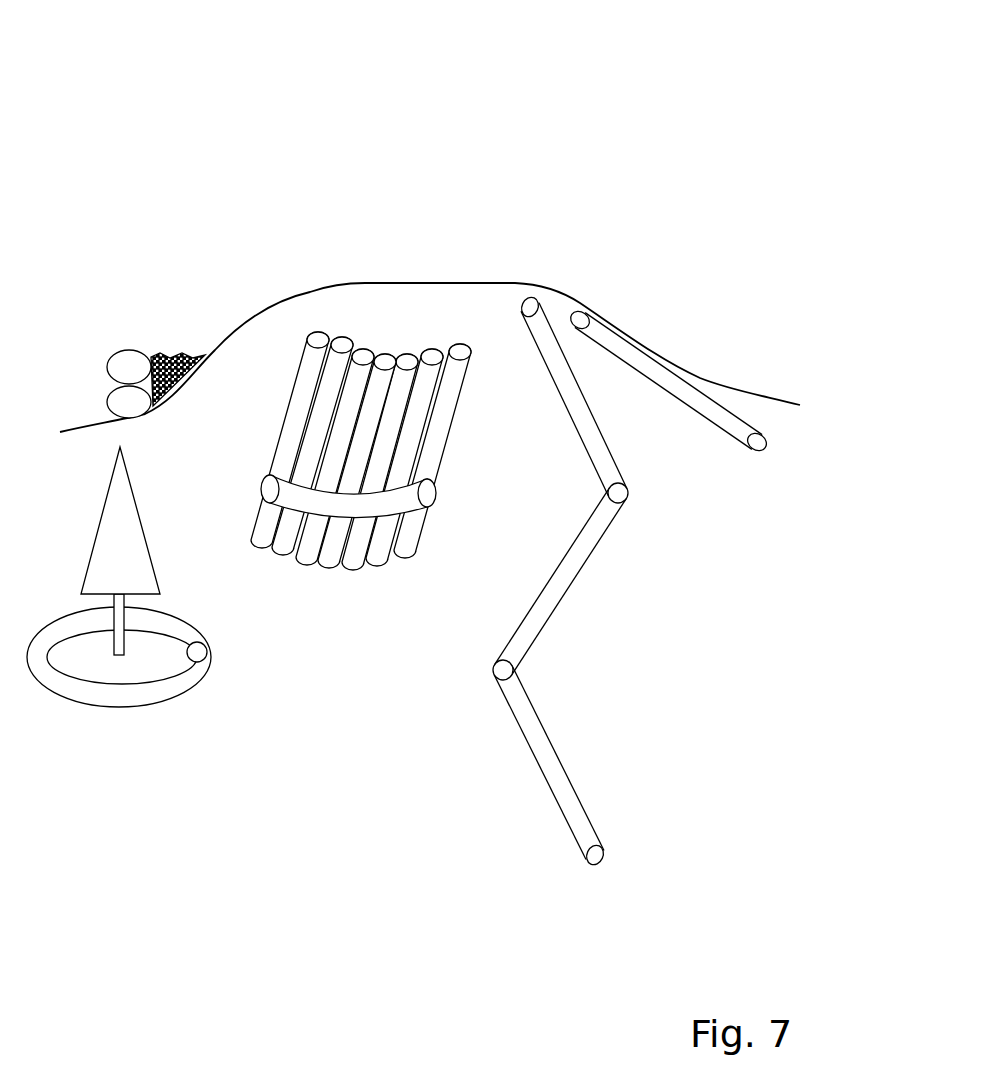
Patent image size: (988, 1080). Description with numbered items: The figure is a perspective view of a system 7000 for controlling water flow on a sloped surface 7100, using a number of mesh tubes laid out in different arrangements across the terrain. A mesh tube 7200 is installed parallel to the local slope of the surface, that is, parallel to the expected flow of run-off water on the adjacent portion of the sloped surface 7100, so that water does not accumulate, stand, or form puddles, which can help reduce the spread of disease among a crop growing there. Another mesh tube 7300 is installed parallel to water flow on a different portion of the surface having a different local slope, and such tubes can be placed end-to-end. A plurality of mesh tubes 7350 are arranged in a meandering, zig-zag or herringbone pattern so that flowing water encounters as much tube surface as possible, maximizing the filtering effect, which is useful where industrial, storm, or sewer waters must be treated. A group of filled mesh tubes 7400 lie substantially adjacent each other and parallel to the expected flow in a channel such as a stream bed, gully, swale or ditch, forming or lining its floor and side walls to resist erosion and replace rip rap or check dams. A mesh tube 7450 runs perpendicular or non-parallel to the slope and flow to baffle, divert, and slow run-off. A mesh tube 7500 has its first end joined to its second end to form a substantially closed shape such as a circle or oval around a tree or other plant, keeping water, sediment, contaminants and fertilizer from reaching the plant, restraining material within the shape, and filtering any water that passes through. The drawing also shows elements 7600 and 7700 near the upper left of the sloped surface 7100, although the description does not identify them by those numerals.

The system 7000 is at (191, 131).
The sloped surface 7100 is at (572, 270).
The mesh tube 7200 is at (636, 337).
The mesh tube 7300 is at (608, 581).
The mesh tubes 7350 is at (589, 612).
The filled mesh tubes 7400 is at (359, 592).
The mesh tube 7450 is at (301, 506).
The mesh tube 7500 is at (132, 734).
The ellipsoidal bodies 7600 is at (119, 327).
The granular material 7700 is at (198, 327).